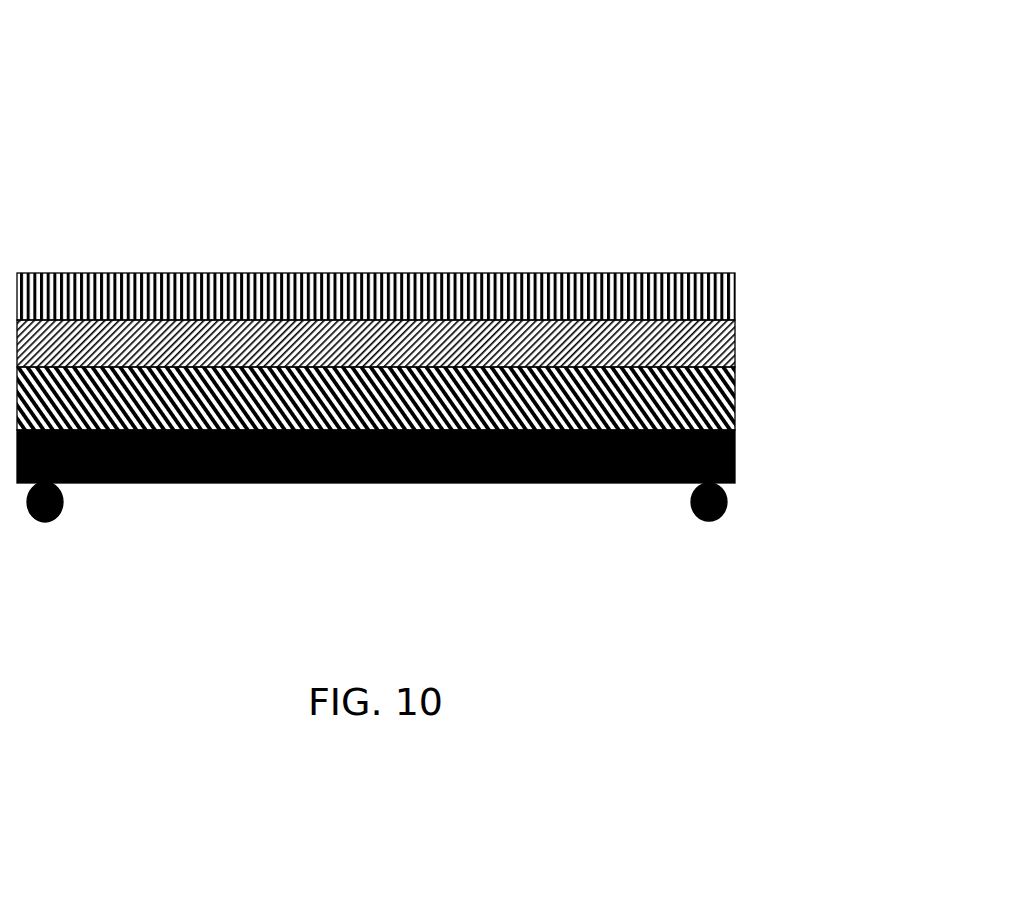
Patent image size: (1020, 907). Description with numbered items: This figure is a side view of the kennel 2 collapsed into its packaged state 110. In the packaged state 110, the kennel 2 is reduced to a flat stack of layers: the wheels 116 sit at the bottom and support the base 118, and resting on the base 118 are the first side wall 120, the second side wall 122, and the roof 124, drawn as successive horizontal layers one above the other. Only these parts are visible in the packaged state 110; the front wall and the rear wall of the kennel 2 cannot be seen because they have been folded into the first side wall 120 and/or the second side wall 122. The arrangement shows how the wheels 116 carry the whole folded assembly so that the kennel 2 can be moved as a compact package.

The kennel 2 is at (435, 351).
The packaged state 110 is at (435, 313).
The wheels 116 is at (52, 520).
The base 118 is at (735, 462).
The first side wall 120 is at (735, 400).
The second side wall 122 is at (735, 343).
The roof 124 is at (600, 273).